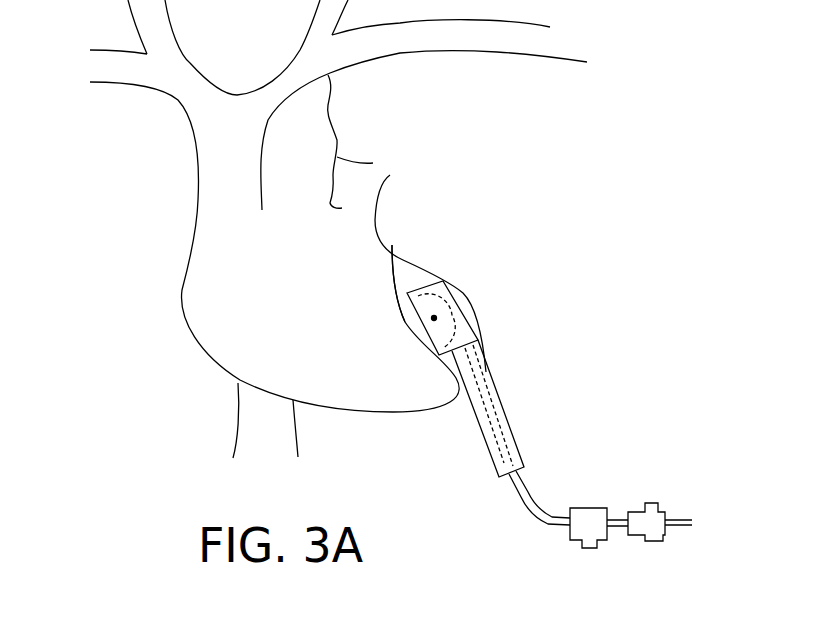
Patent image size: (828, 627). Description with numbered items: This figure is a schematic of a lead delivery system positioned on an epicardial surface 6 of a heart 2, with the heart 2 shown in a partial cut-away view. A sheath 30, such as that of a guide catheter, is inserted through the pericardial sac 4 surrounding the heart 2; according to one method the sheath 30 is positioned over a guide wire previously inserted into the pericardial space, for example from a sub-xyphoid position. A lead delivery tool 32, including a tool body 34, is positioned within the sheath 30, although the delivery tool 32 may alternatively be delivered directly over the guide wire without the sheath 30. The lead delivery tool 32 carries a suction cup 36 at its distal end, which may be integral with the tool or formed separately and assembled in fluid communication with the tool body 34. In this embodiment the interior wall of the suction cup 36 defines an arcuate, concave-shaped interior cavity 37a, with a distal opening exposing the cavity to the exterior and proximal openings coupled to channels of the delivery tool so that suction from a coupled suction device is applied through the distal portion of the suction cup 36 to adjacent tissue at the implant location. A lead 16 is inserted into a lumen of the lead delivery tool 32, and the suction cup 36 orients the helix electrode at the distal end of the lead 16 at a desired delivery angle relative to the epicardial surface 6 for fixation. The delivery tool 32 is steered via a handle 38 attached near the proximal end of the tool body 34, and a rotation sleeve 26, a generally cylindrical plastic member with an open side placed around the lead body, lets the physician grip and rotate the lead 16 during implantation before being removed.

The heart 2 is at (147, 242).
The epicardial surface 6 is at (400, 284).
The pericardial sac 4 is at (435, 277).
The suction cup 36 is at (472, 307).
The interior cavity 37a is at (433, 318).
The sheath 30 is at (507, 412).
The lead delivery tool 32 is at (535, 489).
The tool body 34 is at (513, 500).
The lead 16 is at (623, 518).
The handle 38 is at (586, 553).
The rotation sleeve 26 is at (659, 548).